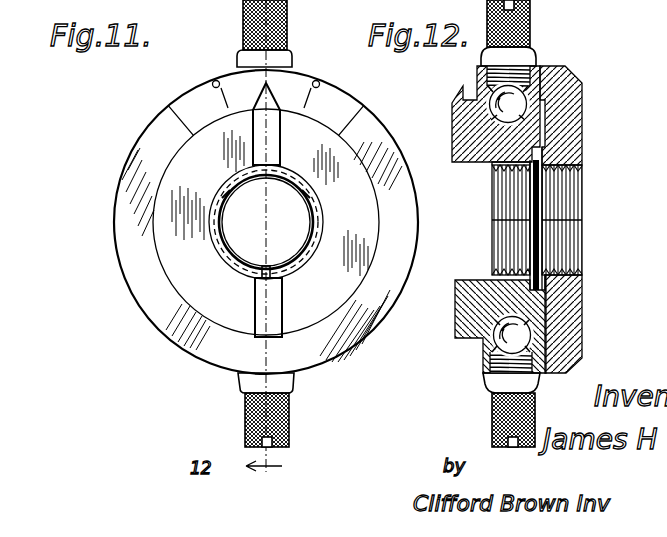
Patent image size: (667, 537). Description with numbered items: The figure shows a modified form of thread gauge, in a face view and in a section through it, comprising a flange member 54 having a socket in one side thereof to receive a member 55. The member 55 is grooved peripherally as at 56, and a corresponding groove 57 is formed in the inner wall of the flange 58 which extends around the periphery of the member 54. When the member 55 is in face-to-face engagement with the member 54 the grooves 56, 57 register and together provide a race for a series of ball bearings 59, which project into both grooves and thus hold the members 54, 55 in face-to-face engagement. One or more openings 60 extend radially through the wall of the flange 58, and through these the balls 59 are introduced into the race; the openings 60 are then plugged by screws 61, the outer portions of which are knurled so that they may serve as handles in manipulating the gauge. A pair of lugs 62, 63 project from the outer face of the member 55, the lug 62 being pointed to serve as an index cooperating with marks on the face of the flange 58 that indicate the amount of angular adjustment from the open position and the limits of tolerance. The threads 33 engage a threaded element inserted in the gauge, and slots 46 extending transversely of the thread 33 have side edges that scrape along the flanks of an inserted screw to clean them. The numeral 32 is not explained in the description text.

In FIG. 11, the dial ring 32 is at (227, 221).
In FIG. 11, the thread 33 is at (267, 266).
In FIG. 12, the thread 33 is at (575, 190).
In FIG. 11, the slots 46 is at (312, 196).
In FIG. 12, the slots 46 is at (500, 206).
In FIG. 11, the flange member 54 is at (116, 252).
In FIG. 12, the flange member 54 is at (580, 137).
In FIG. 11, the member 55 is at (368, 197).
In FIG. 12, the member 55 is at (498, 170).
In FIG. 12, the peripheral groove 56 is at (545, 118).
In FIG. 12, the groove 57 is at (546, 87).
In FIG. 11, the flange 58 is at (155, 135).
In FIG. 12, the flange 58 is at (480, 76).
In FIG. 12, the ball bearings 59 is at (490, 110).
In FIG. 12, the openings 60 is at (492, 368).
In FIG. 11, the screws 61 is at (285, 36).
In FIG. 12, the screws 61 is at (531, 28).
In FIG. 11, the lug 62 is at (258, 118).
In FIG. 12, the lug 62 is at (468, 137).
In FIG. 11, the lug 63 is at (258, 290).
In FIG. 12, the lug 63 is at (472, 296).